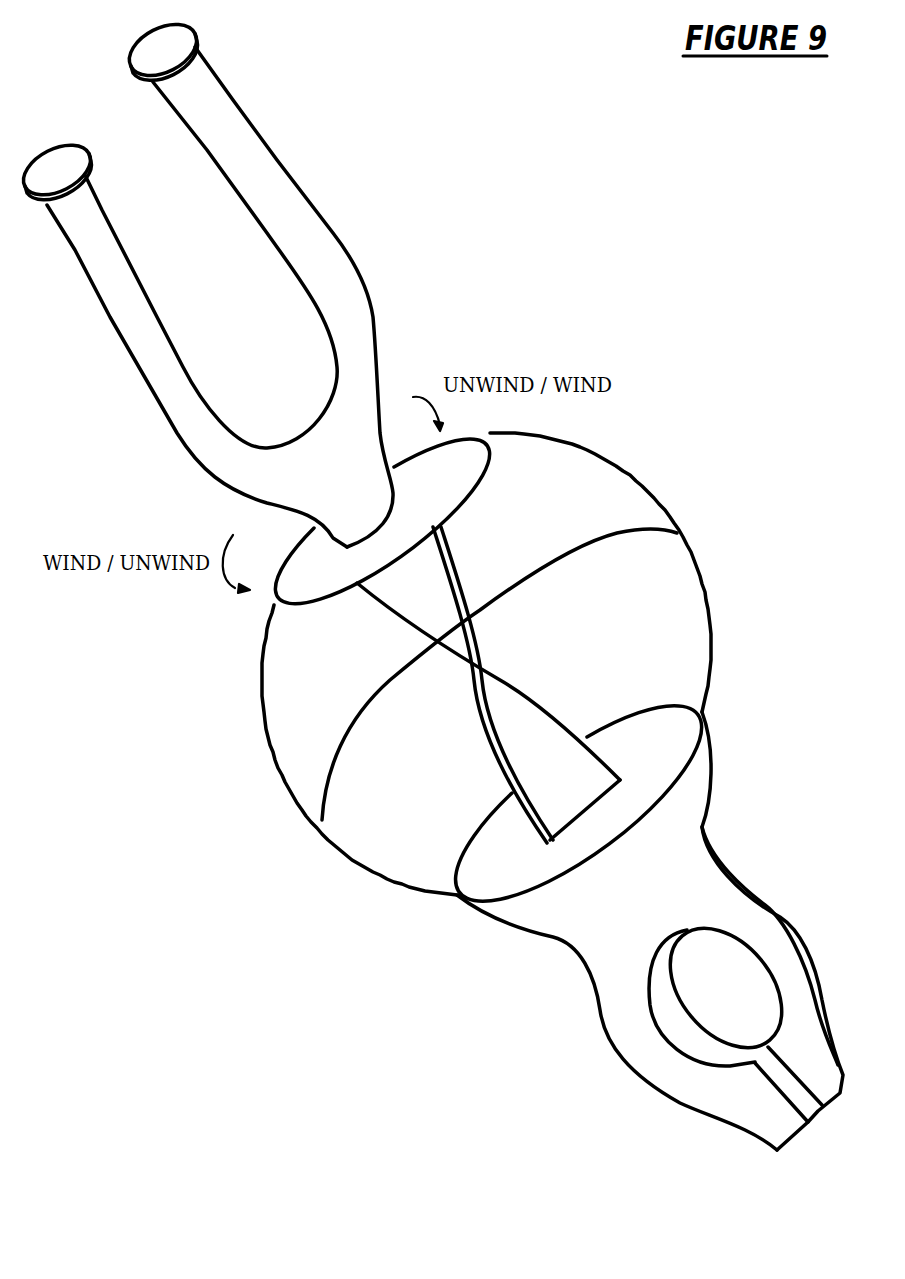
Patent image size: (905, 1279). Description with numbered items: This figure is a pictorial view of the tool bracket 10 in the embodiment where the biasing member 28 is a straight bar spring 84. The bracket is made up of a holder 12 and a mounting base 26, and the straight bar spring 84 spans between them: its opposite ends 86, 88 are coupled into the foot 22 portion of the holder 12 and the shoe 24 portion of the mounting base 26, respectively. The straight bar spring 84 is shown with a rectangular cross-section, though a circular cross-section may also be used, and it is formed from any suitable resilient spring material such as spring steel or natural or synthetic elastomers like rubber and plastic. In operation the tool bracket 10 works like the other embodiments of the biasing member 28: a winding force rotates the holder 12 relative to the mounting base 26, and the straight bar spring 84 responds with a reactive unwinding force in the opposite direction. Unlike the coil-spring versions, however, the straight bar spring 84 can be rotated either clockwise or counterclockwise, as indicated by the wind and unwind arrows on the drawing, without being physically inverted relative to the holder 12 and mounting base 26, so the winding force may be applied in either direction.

The tool bracket 10 is at (710, 335).
The holder 12 is at (420, 277).
The foot 22 is at (617, 446).
The shoe 24 is at (387, 879).
The mounting base 26 is at (566, 1110).
The biasing member 28 is at (662, 580).
The straight bar spring 84 is at (489, 740).
The end of straight bar spring 86 is at (448, 540).
The end of straight bar spring 88 is at (613, 772).